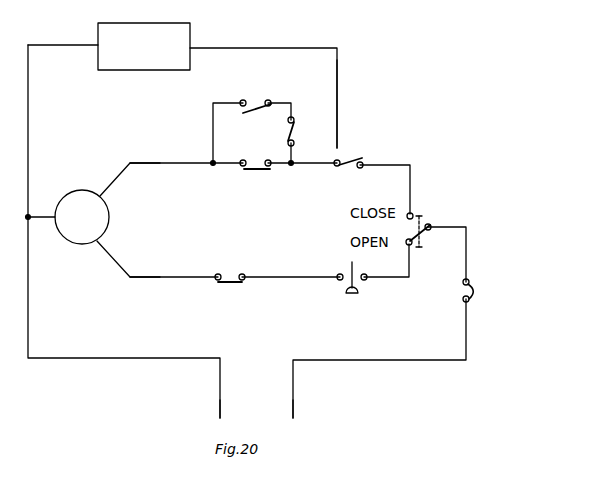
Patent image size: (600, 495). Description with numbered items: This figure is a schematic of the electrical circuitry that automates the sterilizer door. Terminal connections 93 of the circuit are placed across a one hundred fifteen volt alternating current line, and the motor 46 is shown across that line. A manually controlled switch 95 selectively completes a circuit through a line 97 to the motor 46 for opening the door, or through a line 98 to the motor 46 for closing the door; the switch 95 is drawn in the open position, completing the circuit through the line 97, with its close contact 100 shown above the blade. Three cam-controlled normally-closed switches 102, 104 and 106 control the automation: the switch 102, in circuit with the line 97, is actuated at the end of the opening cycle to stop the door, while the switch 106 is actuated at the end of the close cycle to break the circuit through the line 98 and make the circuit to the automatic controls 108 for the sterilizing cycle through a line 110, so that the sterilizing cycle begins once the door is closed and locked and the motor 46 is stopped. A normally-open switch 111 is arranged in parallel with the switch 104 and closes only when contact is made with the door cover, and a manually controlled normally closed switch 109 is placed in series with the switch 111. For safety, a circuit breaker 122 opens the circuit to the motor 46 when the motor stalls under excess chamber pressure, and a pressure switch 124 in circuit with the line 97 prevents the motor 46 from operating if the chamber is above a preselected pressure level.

The automatic controls 108 is at (184, 36).
The motor 46 is at (80, 235).
The line 98 is at (146, 164).
The line 97 is at (134, 272).
The normally-open switch 111 is at (256, 110).
The manually controlled normally closed switch 109 is at (298, 128).
The line 110 is at (338, 107).
The cam-controlled normally-closed switch 104 is at (251, 171).
The cam-controlled normally-closed switch 106 is at (348, 158).
The cam-controlled normally-closed switch 102 is at (235, 276).
The pressure switch 124 is at (371, 295).
The close contact 100 is at (411, 209).
The manually controlled switch 95 is at (432, 208).
The circuit breaker 122 is at (478, 284).
The terminal connections 93 is at (293, 391).